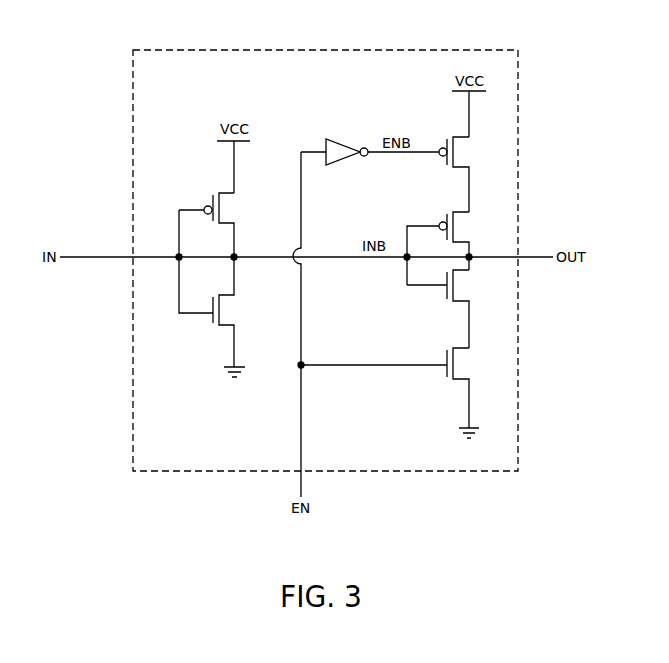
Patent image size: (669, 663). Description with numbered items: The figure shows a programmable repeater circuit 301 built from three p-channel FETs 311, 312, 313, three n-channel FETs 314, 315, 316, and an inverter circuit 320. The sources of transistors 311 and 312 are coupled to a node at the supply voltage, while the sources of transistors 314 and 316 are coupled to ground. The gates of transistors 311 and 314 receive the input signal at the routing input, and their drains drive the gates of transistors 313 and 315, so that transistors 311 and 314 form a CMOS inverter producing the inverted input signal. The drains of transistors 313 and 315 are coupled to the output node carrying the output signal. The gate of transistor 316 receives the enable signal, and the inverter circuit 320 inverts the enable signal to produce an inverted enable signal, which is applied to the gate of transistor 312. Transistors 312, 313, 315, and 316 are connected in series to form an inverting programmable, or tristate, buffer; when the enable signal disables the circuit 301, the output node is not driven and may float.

The programmable repeater circuit 301 is at (488, 50).
The p-channel FET 311 is at (213, 199).
The n-channel FET 314 is at (213, 319).
The p-channel FET 312 is at (447, 140).
The p-channel FET 313 is at (447, 214).
The n-channel FET 315 is at (447, 298).
The n-channel FET 316 is at (447, 377).
The inverter circuit 320 is at (343, 159).